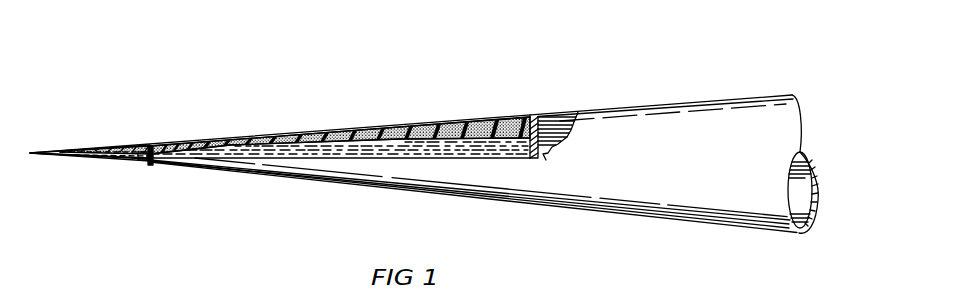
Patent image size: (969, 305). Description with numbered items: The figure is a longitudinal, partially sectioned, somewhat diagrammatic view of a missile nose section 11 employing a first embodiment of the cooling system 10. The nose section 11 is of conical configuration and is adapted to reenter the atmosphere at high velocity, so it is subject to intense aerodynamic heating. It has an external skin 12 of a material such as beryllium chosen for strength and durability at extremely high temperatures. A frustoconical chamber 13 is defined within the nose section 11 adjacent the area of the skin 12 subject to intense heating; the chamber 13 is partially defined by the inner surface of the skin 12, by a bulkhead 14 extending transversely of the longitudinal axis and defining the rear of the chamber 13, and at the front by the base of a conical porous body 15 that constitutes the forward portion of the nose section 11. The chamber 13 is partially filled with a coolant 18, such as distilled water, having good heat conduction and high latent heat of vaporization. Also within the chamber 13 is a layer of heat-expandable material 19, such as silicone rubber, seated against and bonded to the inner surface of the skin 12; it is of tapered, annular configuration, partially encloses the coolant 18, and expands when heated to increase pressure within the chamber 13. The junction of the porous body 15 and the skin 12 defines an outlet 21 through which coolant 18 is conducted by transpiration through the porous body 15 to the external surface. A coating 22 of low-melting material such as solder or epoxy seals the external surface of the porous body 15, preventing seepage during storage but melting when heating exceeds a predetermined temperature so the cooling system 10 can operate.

The cooling system 10 is at (422, 120).
The nose section 11 is at (677, 79).
The external skin 12 is at (265, 134).
The frustoconical chamber 13 is at (553, 148).
The bulkhead 14 is at (531, 160).
The porous body 15 is at (120, 150).
The coolant 18 is at (427, 150).
The heat-expandable material 19 is at (512, 122).
The outlet 21 is at (155, 160).
The coating 22 is at (146, 160).